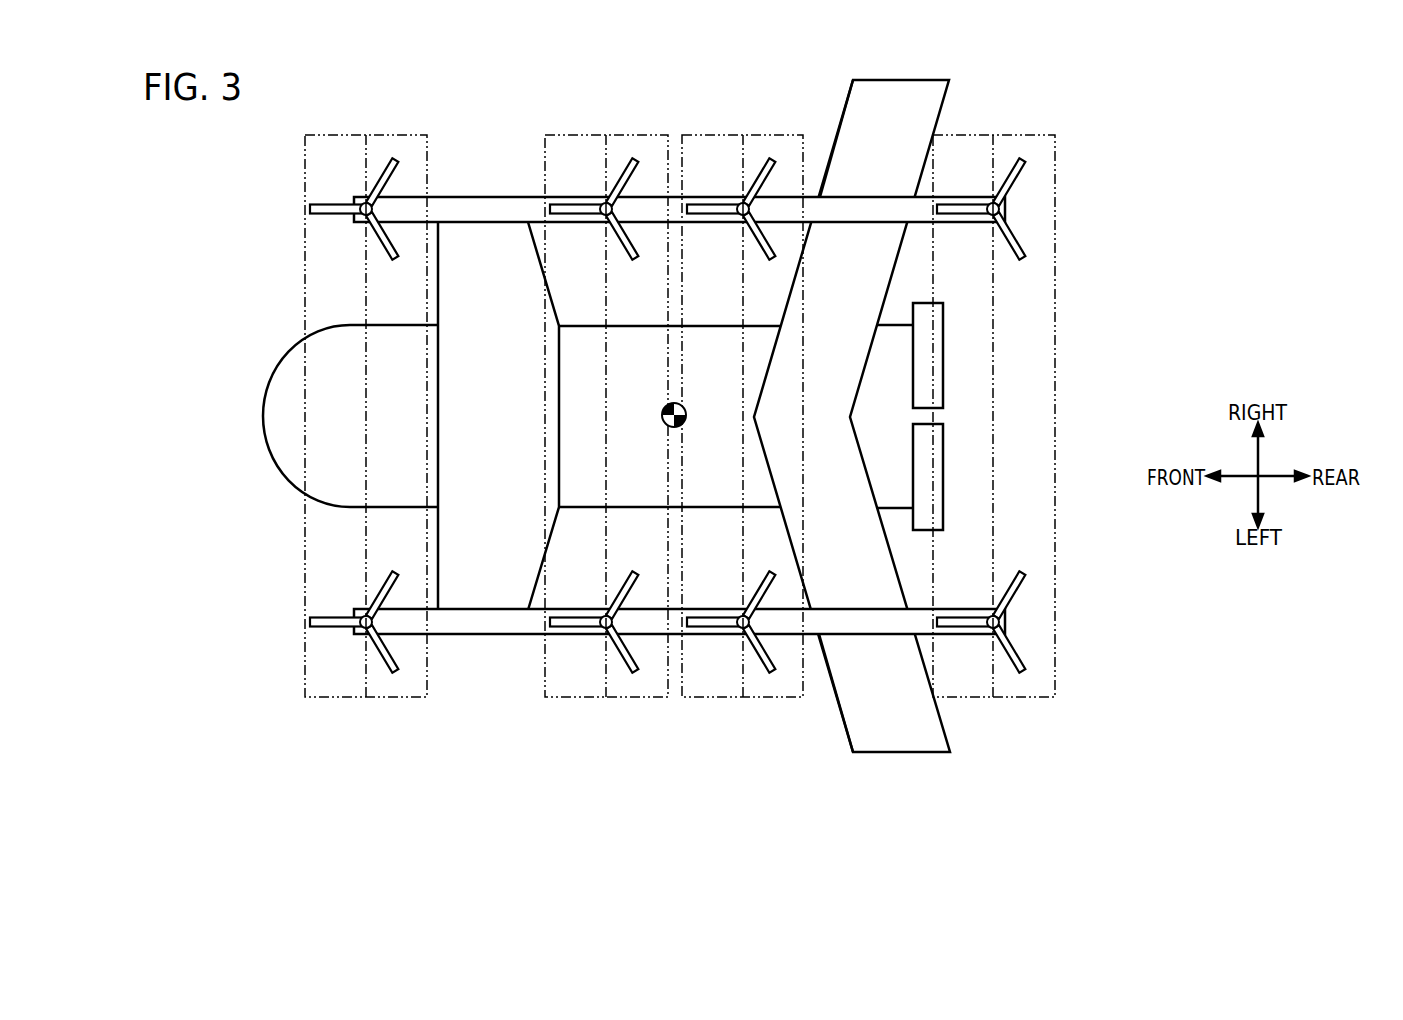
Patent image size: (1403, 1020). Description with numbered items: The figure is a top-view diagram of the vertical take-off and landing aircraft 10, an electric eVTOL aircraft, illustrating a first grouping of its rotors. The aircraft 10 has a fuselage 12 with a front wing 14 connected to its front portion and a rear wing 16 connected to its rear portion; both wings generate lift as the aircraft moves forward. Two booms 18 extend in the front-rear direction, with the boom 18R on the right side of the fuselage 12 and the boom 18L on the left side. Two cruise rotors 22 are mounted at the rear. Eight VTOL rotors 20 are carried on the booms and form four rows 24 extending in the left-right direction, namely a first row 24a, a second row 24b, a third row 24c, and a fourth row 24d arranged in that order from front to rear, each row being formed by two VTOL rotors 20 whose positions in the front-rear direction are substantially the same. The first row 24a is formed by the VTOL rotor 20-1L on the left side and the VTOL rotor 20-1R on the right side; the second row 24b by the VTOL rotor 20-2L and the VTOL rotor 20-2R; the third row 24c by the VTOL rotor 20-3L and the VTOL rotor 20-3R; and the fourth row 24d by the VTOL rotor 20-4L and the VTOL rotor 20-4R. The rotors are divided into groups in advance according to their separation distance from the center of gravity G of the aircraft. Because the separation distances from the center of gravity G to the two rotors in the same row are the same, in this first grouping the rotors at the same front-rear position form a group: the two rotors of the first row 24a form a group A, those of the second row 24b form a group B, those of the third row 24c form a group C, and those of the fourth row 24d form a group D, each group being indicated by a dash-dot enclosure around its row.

The vertical take-off and landing aircraft 10 is at (199, 159).
The fuselage 12 is at (265, 385).
The front wing 14 is at (471, 245).
The rear wing 16 is at (893, 80).
The boom 18 is at (858, 416).
The boom 18R is at (850, 195).
The boom 18L is at (852, 637).
The VTOL rotor 20 is at (672, 404).
The VTOL rotor 20-1R is at (309, 209).
The VTOL rotor 20-2R is at (568, 206).
The VTOL rotor 20-3R is at (700, 206).
The VTOL rotor 20-4R is at (1015, 176).
The VTOL rotor 20-1L is at (309, 622).
The VTOL rotor 20-2L is at (570, 624).
The VTOL rotor 20-3L is at (705, 625).
The VTOL rotor 20-4L is at (1013, 658).
The cruise rotor 22 is at (943, 363).
The row 24 is at (670, 416).
The first row 24a is at (363, 287).
The second row 24b is at (606, 362).
The third row 24c is at (743, 295).
The fourth row 24d is at (993, 278).
The group A is at (380, 133).
The group B is at (618, 133).
The group C is at (755, 133).
The group D is at (1005, 135).
The center of gravity G is at (668, 423).